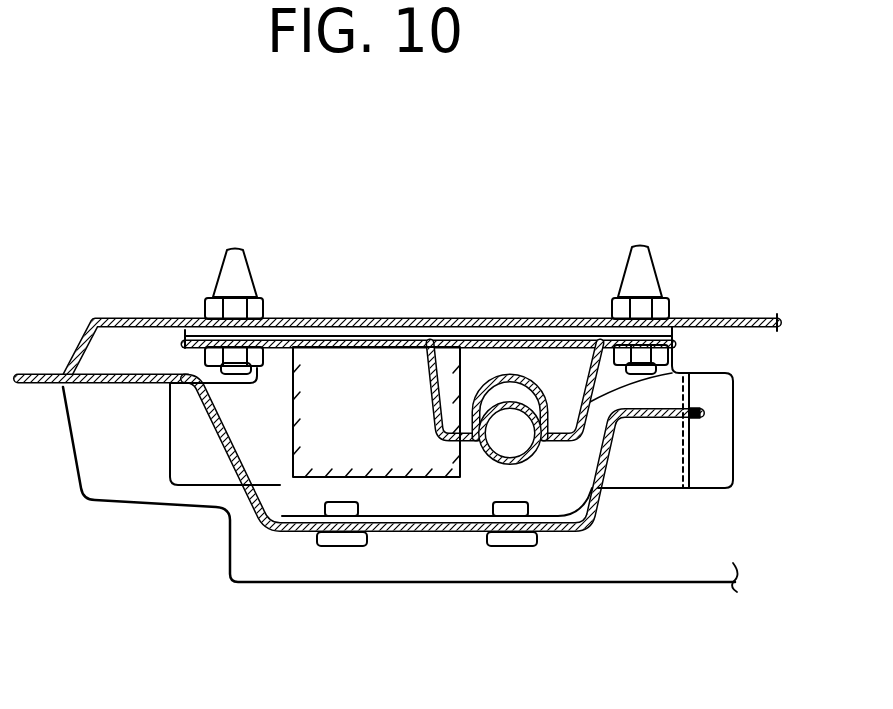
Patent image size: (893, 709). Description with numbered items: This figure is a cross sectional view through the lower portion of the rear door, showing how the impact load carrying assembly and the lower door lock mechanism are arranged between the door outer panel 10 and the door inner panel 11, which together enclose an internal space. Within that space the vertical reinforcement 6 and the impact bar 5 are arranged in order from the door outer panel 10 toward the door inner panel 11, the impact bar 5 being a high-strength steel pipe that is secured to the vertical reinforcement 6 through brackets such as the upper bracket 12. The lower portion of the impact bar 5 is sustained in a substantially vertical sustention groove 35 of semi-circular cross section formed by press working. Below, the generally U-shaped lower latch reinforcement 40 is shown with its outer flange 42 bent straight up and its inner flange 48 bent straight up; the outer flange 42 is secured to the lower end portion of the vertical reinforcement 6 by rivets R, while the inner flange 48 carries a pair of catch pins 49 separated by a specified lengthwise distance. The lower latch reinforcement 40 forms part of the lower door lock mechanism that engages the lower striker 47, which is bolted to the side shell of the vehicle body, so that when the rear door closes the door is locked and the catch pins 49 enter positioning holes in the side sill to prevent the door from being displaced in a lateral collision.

The impact bar 5 is at (497, 422).
The vertical reinforcement 6 is at (95, 383).
The door outer panel 10 is at (690, 590).
The door inner panel 11 is at (717, 318).
The upper bracket 12 is at (677, 377).
The sustention groove 35 is at (515, 377).
The lower latch reinforcement 40 is at (643, 475).
The outer flange 42 is at (431, 532).
The lower striker 47 is at (380, 430).
The inner flange 48 is at (333, 327).
The catch pin 49 is at (217, 268).
The rivet R is at (317, 548).